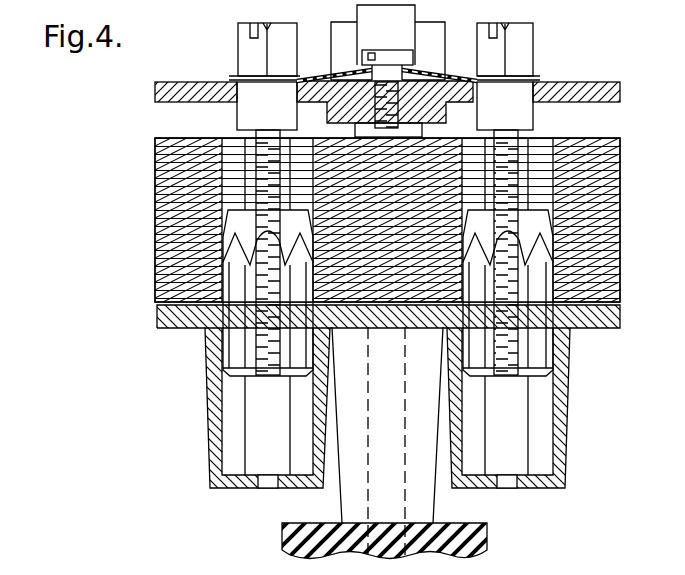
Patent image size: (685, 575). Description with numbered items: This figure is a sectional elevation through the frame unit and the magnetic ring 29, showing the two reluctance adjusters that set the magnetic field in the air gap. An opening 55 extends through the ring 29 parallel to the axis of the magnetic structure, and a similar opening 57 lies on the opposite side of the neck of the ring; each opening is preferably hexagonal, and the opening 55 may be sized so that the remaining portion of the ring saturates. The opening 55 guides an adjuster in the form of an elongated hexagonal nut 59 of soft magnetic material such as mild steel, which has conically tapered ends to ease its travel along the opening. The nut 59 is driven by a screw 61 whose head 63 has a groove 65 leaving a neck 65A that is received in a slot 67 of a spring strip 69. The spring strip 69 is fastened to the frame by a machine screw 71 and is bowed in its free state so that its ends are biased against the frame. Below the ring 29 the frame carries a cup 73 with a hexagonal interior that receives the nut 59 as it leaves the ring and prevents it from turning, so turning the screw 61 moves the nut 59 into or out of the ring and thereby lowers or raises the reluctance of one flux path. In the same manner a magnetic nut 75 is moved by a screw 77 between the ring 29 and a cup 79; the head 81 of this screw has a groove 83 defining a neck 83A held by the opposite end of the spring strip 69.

The ring 29 is at (155, 183).
The opening 55 is at (232, 138).
The opening 57 is at (545, 148).
The adjuster nut 59 is at (233, 350).
The screw 61 is at (298, 143).
The head 63 is at (240, 38).
The groove 65 is at (238, 75).
The neck 65A is at (267, 110).
The slot 67 is at (236, 80).
The spring strip 69 is at (323, 76).
The machine screw 71 is at (390, 60).
The cup 73 is at (212, 433).
The magnetic nut 75 is at (540, 352).
The screw 77 is at (480, 148).
The cup 79 is at (565, 436).
The head 81 is at (533, 43).
The groove 83 is at (534, 80).
The neck 83A is at (505, 110).